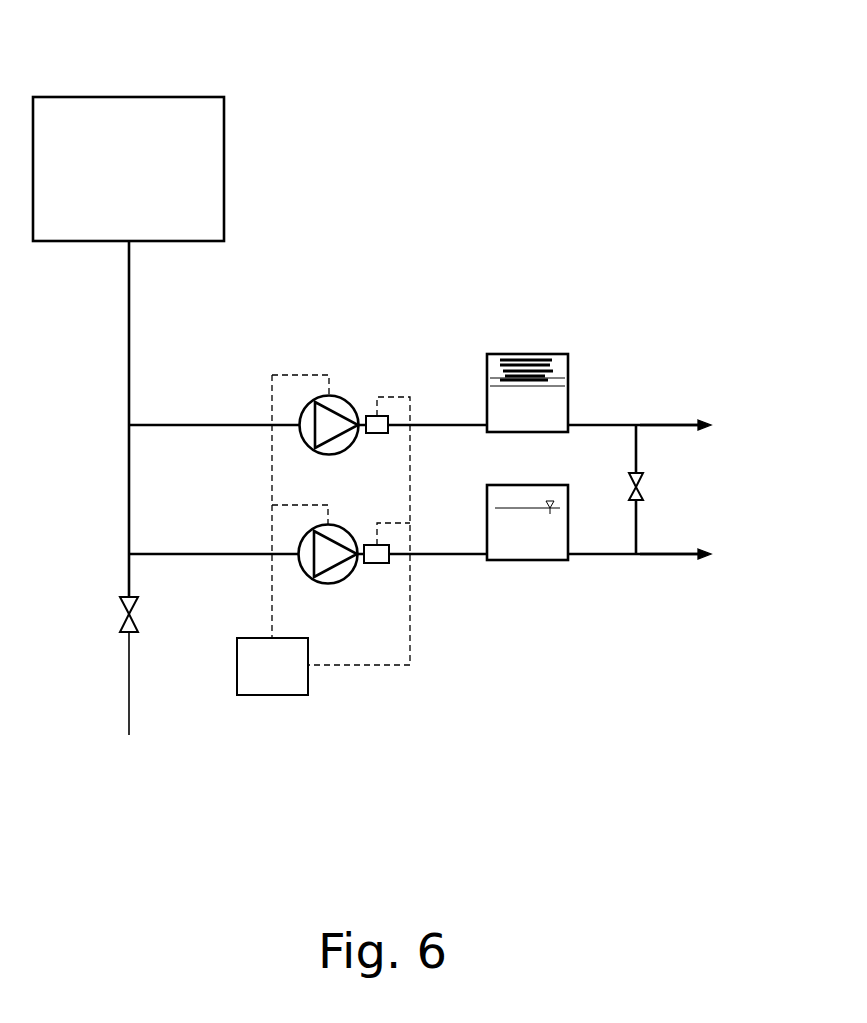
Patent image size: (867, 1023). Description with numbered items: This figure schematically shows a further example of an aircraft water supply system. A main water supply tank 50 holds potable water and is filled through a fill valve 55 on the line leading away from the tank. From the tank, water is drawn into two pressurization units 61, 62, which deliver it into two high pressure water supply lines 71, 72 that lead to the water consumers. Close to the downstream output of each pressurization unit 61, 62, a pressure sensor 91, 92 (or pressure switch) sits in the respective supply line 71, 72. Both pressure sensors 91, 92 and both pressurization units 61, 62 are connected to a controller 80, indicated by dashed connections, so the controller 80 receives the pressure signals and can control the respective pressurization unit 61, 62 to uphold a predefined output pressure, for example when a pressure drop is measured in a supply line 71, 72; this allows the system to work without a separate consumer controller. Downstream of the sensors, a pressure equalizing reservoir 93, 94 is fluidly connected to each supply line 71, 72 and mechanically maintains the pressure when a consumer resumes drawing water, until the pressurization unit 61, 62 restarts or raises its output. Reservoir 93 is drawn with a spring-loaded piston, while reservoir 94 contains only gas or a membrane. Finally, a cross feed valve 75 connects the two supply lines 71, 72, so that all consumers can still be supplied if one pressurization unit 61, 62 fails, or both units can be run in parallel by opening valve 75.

The main water supply tank 50 is at (127, 127).
The fill valve 55 is at (127, 612).
The pressurization unit 61 is at (337, 407).
The pressurization unit 62 is at (338, 575).
The high pressure water supply line 71 is at (670, 423).
The high pressure water supply line 72 is at (678, 557).
The cross feed valve 75 is at (642, 483).
The controller 80 is at (268, 678).
The pressure sensor 91 is at (370, 415).
The pressure sensor 92 is at (390, 558).
The pressure equalizing reservoir 93 is at (568, 373).
The pressure equalizing reservoir 94 is at (570, 560).